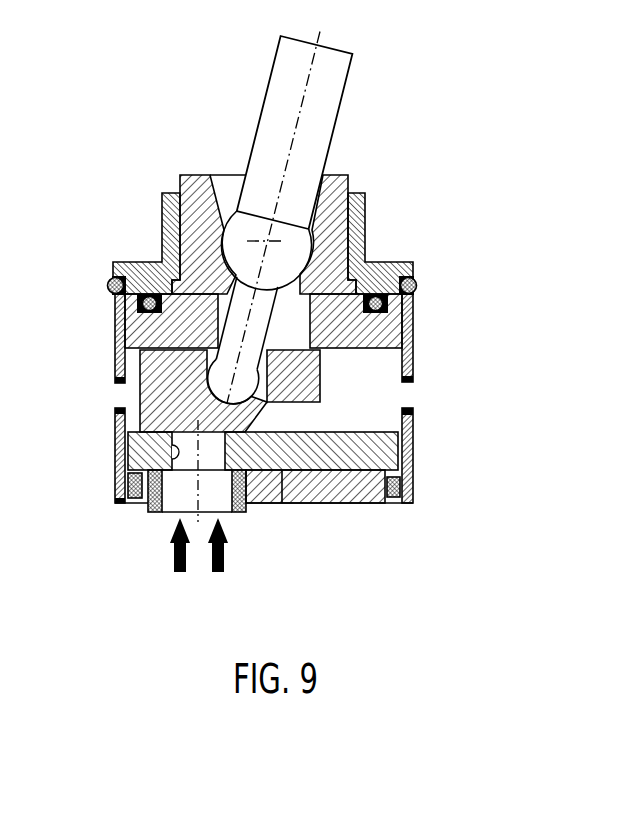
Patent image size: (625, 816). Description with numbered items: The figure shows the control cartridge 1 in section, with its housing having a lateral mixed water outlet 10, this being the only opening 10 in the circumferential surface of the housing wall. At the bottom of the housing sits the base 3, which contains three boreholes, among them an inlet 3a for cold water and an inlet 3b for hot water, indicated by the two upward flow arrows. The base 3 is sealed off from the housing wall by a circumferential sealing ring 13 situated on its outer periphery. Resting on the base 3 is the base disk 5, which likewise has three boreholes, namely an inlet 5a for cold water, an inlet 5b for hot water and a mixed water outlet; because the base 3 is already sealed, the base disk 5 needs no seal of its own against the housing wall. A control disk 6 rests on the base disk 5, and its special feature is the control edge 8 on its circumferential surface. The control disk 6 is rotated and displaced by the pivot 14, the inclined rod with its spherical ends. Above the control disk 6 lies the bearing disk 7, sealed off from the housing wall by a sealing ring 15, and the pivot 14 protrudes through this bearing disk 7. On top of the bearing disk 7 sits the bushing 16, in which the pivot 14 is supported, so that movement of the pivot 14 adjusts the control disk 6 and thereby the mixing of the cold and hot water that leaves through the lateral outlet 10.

The control cartridge 1 is at (500, 255).
The base 3 is at (257, 503).
The inlet for cold water 3a is at (176, 560).
The inlet for hot water 3b is at (220, 563).
The base disk 5 is at (413, 452).
The inlet for cold water 5a is at (126, 453).
The inlet for hot water 5b is at (311, 451).
The control disk 6 is at (122, 383).
The bearing disk 7 is at (115, 327).
The control edge 8 is at (120, 411).
The lateral mixed water outlet 10 is at (408, 396).
The sealing ring 13 is at (410, 492).
The pivot 14 is at (348, 80).
The sealing ring 15 is at (379, 265).
The bushing 16 is at (348, 183).